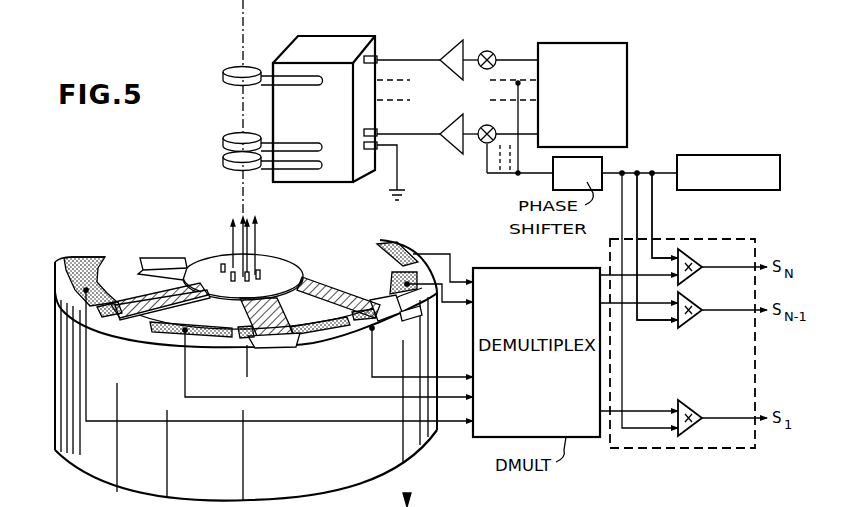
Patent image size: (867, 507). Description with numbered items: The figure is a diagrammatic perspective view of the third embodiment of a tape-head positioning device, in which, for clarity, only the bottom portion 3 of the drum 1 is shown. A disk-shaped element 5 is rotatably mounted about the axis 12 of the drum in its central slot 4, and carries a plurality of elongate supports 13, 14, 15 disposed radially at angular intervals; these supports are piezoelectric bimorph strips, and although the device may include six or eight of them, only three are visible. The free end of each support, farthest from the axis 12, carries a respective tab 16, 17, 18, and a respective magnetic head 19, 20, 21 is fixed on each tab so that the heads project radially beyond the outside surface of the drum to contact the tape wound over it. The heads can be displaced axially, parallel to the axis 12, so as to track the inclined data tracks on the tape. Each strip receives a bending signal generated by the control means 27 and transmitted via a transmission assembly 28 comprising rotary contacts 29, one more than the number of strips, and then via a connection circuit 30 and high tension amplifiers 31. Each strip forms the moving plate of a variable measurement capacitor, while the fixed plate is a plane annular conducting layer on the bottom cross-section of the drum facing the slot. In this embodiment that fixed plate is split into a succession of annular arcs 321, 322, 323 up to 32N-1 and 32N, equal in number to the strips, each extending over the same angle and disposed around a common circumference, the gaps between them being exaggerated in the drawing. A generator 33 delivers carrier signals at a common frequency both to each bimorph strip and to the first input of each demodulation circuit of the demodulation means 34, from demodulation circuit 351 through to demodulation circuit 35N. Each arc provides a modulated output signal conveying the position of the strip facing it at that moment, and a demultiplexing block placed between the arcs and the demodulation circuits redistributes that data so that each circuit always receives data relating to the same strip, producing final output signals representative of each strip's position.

The drum 1 is at (52, 284).
The bottom portion 3 is at (98, 448).
The central slot 4 is at (75, 246).
The disk-shaped element 5 is at (230, 262).
The axis 12 is at (239, 190).
The elongate support 13 is at (163, 282).
The elongate support 14 is at (285, 312).
The elongate support 15 is at (342, 288).
The tab 16 is at (107, 318).
The tab 17 is at (260, 342).
The tab 18 is at (394, 322).
The magnetic head 19 is at (125, 330).
The magnetic head 20 is at (272, 346).
The magnetic head 21 is at (405, 306).
The control means 27 is at (627, 52).
The transmission assembly 28 is at (290, 55).
The rotary contacts 29 is at (224, 79).
The connection circuit 30 is at (336, 36).
The high tension amplifiers 31 is at (447, 118).
The annular arc 32N is at (400, 239).
The annular arc 32N-1 is at (392, 274).
The annular arc 321 is at (102, 250).
The annular arc 322 is at (175, 342).
The annular arc 323 is at (381, 344).
The generator 33 is at (734, 155).
The demodulation means 34 is at (755, 376).
The demodulation circuit 35N is at (695, 249).
The demodulation circuit 351 is at (690, 407).